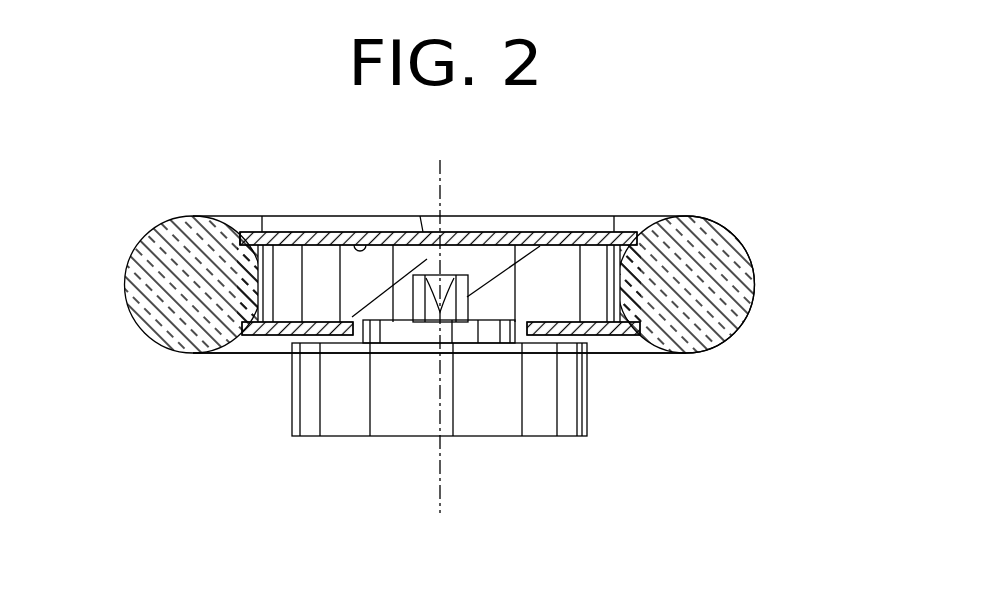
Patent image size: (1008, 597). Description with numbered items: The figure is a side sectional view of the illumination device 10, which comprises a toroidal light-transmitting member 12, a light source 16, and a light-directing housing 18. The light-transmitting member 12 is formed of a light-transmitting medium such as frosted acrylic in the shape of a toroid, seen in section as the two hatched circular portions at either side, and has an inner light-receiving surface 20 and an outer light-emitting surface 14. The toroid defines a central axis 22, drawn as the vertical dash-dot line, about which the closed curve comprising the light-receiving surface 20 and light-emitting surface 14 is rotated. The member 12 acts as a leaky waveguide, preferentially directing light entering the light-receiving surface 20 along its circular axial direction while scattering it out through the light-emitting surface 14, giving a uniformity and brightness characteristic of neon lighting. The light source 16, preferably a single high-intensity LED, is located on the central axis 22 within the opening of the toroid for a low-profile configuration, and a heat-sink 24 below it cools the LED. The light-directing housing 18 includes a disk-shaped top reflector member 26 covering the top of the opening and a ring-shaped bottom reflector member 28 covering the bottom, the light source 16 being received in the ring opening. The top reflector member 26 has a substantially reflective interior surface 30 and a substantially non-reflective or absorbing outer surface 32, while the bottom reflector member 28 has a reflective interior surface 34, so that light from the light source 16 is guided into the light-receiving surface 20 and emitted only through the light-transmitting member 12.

The illumination device 10 is at (116, 88).
The light-transmitting member 12 is at (714, 242).
The light-emitting surface 14 is at (755, 293).
The light source 16 is at (414, 311).
The light-directing housing 18 is at (612, 232).
The light-receiving surface 20 is at (708, 347).
The central axis 22 is at (440, 485).
The heat-sink 24 is at (406, 428).
The top reflector member 26 is at (539, 246).
The bottom reflector member 28 is at (312, 345).
The interior surface 30 is at (364, 233).
The outer surface 32 is at (296, 233).
The interior surface 34 is at (286, 328).